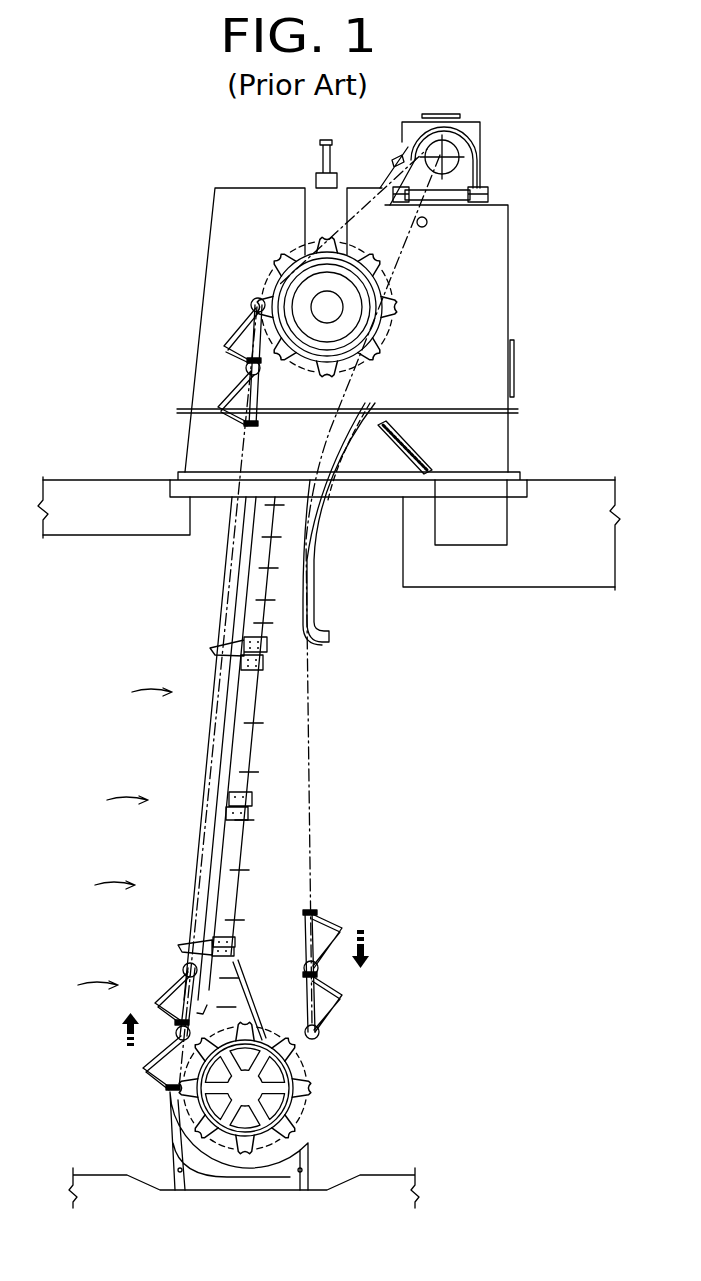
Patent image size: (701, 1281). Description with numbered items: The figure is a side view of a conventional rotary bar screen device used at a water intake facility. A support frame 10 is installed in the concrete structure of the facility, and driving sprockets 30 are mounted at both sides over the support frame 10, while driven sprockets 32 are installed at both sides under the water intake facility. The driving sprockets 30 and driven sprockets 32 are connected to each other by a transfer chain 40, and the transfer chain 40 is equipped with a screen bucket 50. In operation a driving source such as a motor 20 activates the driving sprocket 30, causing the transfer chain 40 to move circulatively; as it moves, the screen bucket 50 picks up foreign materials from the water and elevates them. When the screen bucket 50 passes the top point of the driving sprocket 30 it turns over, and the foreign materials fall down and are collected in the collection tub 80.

The support frame 10 is at (212, 628).
The motor 20 is at (468, 150).
The driving sprocket 30 is at (372, 309).
The driven sprocket 32 is at (298, 1080).
The transfer chain 40 is at (245, 390).
The screen bucket 50 is at (240, 335).
The collection tub 80 is at (490, 533).